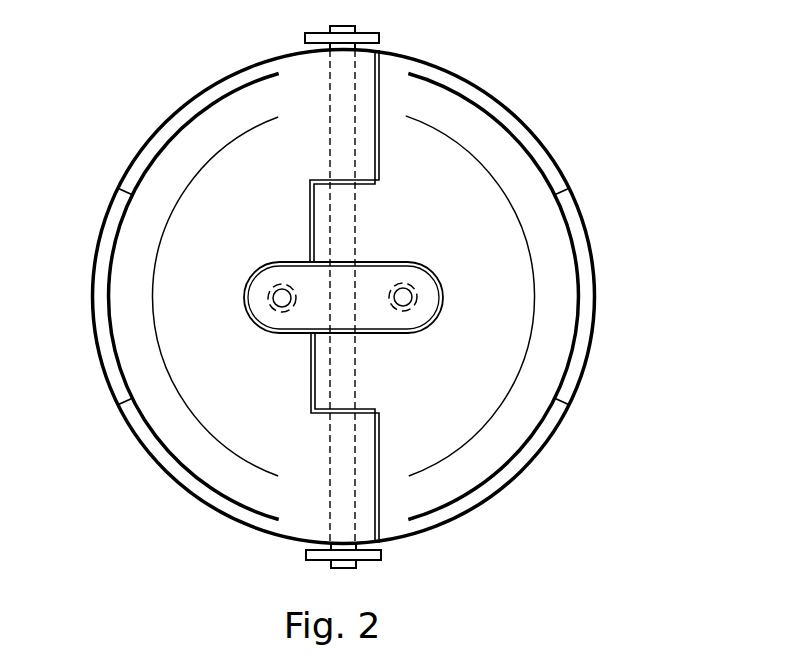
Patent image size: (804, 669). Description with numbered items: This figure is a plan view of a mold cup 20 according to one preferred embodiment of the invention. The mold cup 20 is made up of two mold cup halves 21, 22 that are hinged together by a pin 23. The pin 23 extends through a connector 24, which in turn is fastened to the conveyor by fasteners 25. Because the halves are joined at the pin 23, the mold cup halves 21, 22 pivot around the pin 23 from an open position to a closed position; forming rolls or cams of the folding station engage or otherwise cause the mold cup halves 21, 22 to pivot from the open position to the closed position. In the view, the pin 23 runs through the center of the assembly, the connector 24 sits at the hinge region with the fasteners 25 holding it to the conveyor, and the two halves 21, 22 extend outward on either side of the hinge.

The mold cup 20 is at (563, 118).
The mold cup half 21 is at (142, 150).
The mold cup half 22 is at (596, 288).
The pin 23 is at (358, 370).
The connector 24 is at (371, 262).
The fasteners 25 is at (276, 311).